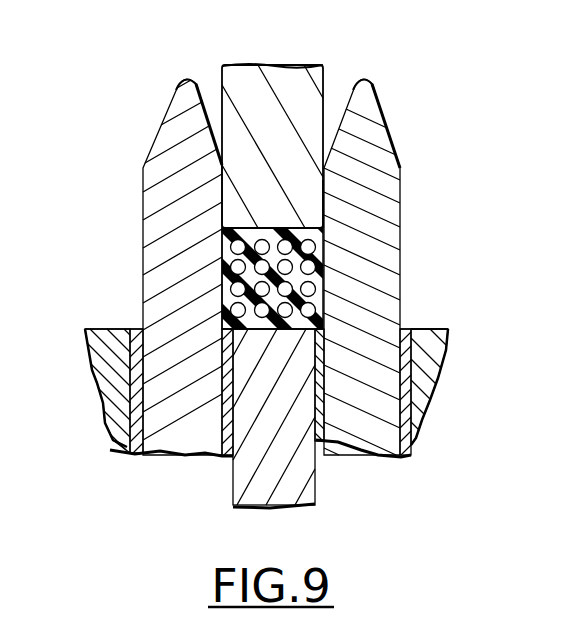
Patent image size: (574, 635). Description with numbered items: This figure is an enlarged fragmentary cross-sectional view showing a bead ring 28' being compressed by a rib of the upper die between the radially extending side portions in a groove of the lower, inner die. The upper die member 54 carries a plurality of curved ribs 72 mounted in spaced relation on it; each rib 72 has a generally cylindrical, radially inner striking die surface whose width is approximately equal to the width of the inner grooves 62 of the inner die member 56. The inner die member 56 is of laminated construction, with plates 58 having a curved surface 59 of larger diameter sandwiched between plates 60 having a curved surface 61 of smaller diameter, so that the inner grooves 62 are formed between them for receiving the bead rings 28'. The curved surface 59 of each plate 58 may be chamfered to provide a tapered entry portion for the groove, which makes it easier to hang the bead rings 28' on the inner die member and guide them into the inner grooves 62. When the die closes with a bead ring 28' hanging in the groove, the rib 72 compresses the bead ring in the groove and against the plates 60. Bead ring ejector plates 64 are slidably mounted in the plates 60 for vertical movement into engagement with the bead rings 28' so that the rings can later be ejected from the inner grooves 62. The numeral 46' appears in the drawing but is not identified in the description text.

The upper die member 54 is at (293, 114).
The plates 58 is at (279, 267).
The curved surface 59 is at (296, 52).
The curved ribs 72 is at (378, 186).
The bead rings 28' is at (336, 272).
The pores 46' is at (199, 279).
The inner grooves 62 is at (333, 291).
The plates 60 is at (138, 352).
The curved surface 61 is at (278, 389).
The bead ring ejector plates 64 is at (272, 418).
The inner die member 56 is at (464, 336).